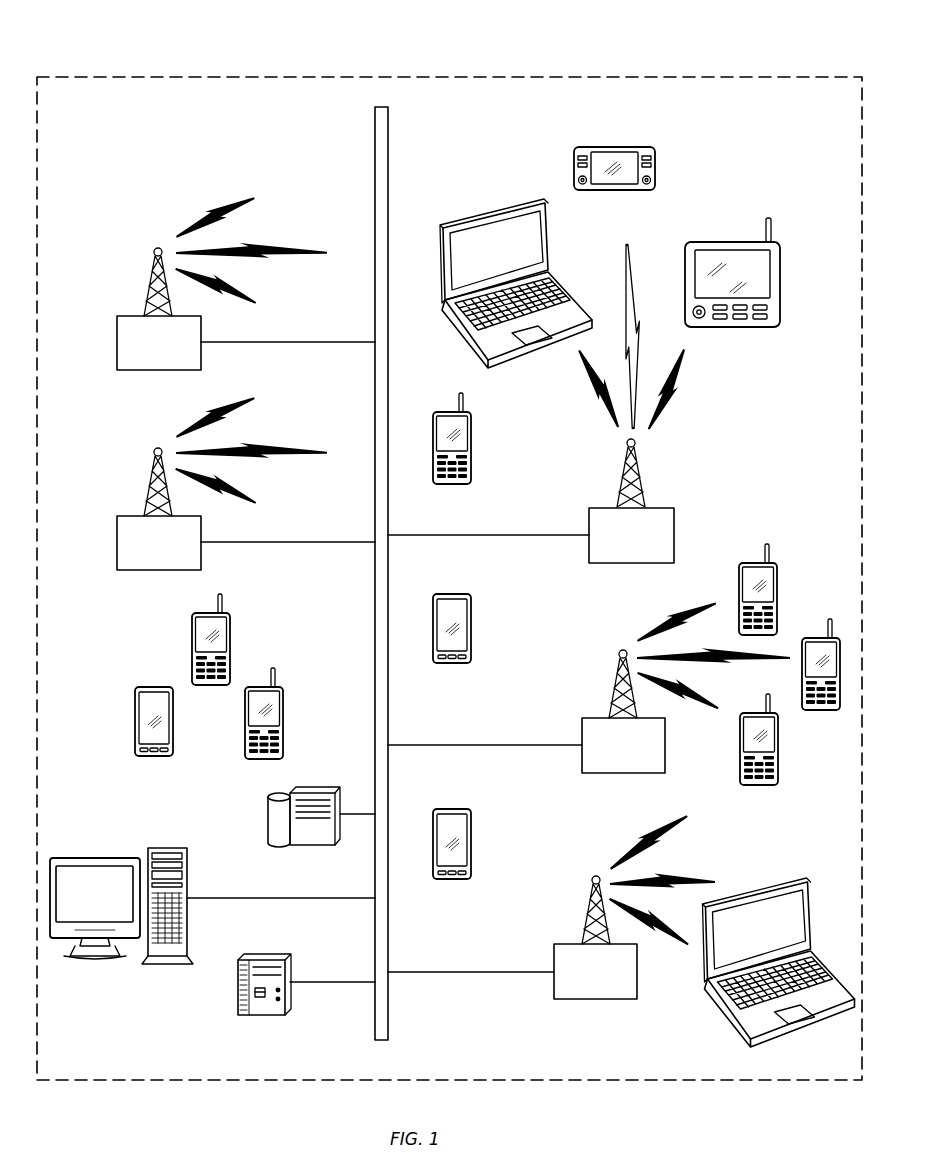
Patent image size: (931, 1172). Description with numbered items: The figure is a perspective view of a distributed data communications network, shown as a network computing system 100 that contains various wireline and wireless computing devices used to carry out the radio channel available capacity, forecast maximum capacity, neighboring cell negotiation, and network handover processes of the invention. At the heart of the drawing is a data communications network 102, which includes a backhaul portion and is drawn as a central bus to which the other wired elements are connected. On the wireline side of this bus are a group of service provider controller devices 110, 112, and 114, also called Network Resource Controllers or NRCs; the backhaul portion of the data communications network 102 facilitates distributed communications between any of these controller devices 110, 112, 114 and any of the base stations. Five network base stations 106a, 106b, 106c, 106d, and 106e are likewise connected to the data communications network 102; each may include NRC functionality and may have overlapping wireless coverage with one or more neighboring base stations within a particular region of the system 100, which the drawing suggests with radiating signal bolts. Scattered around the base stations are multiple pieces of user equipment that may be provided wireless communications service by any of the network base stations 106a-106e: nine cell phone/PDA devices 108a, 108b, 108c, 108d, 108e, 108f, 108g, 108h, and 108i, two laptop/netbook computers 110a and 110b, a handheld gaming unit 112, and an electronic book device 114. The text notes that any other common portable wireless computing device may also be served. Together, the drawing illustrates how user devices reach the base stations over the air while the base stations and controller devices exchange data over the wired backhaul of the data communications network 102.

The network computing system 100 is at (162, 68).
The data communications network 102 is at (375, 122).
The network base station 106a is at (127, 316).
The network base station 106b is at (127, 516).
The network base station 106c is at (563, 944).
The network base station 106d is at (592, 718).
The network base station 106e is at (600, 508).
The cell phone/PDA device 108a is at (135, 718).
The cell phone/PDA device 108b is at (190, 635).
The cell phone/PDA device 108c is at (283, 707).
The cell phone/PDA device 108d is at (472, 833).
The cell phone/PDA device 108e is at (758, 785).
The cell phone/PDA device 108f is at (828, 710).
The cell phone/PDA device 108g is at (778, 588).
The cell phone/PDA device 108h is at (472, 618).
The cell phone/PDA device 108i is at (472, 424).
The service provider controller device 110 is at (268, 815).
The laptop/netbook computer 110a is at (792, 882).
The laptop/netbook computer 110b is at (478, 218).
The service provider controller device 112 is at (163, 848).
The service provider controller device 114 is at (290, 966).